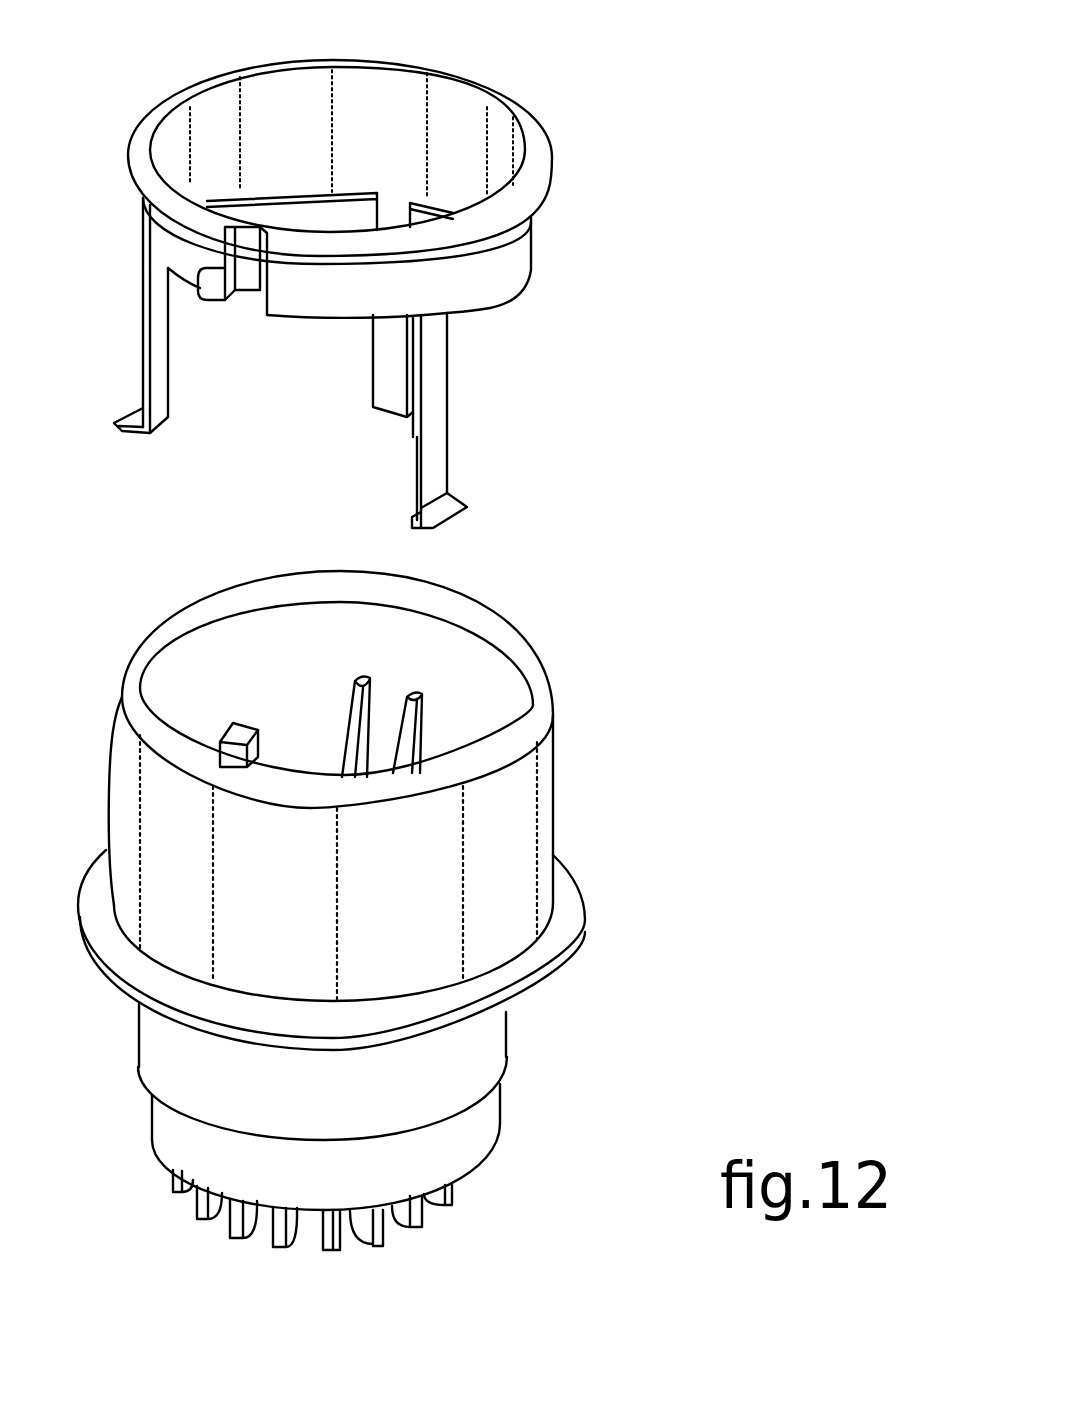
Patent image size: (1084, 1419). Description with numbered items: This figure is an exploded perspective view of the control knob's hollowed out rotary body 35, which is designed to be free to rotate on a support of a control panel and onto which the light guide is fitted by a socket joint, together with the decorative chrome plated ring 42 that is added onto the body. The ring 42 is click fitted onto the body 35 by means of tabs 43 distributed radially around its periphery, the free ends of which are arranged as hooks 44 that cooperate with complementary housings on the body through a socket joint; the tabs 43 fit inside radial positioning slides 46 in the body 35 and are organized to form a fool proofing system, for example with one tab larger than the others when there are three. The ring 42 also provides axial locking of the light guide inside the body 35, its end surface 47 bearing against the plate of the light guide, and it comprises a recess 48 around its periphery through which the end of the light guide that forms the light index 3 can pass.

The decorative chrome plated ring 42 is at (602, 230).
The end surface 47 is at (500, 298).
The tabs 43 is at (447, 393).
The hooks 44 is at (463, 493).
The recess 48 is at (198, 300).
The rotary body 35 is at (553, 800).
The light index 3 is at (227, 727).
The radial positioning slides 46 is at (423, 717).